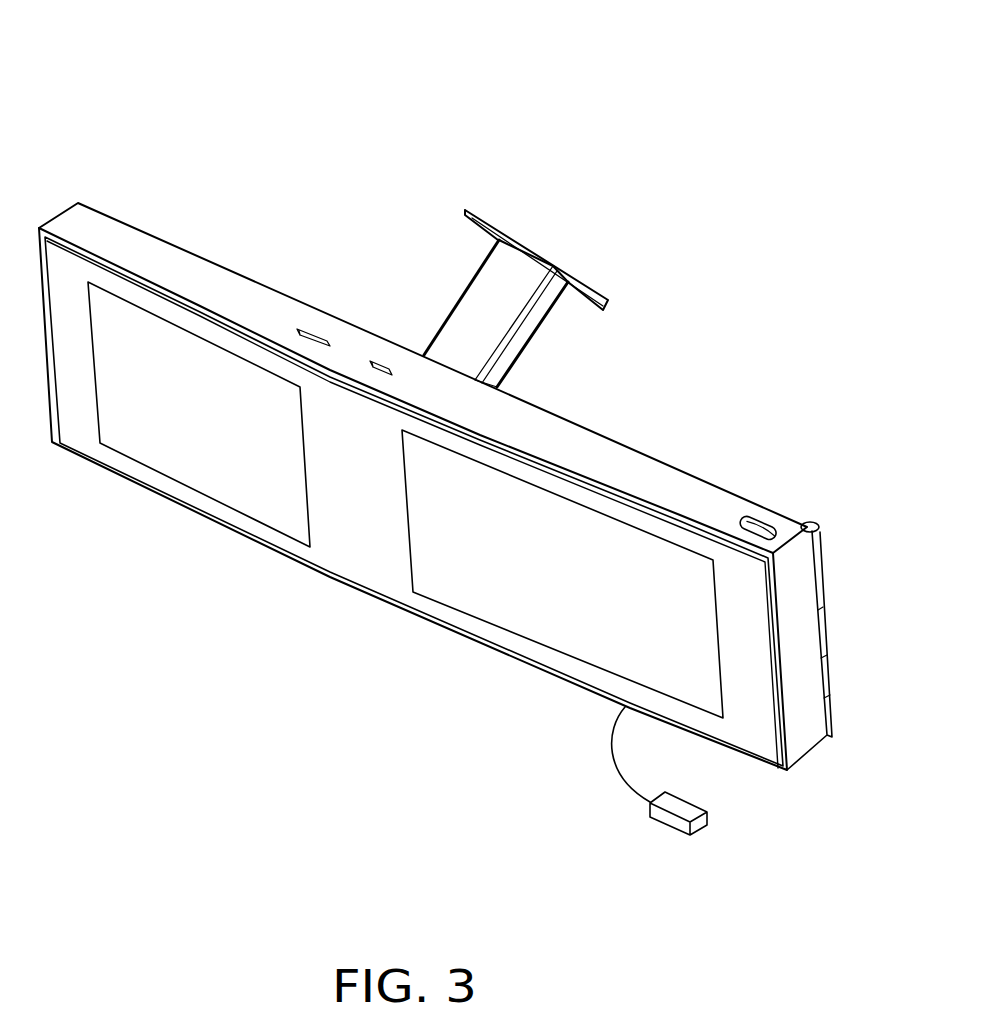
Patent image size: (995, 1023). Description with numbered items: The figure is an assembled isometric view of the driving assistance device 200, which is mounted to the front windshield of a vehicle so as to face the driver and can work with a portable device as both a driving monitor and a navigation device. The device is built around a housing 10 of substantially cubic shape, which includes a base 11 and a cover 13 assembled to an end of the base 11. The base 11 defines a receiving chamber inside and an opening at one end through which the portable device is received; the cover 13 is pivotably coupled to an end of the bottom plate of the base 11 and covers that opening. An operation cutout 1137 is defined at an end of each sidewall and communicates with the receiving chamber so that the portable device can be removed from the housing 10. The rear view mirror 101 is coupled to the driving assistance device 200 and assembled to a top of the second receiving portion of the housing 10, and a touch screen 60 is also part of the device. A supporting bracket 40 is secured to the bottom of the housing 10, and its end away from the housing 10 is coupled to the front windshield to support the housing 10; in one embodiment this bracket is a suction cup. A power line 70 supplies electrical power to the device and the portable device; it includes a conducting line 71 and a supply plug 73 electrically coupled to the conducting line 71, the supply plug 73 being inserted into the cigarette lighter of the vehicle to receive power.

The driving assistance device 200 is at (432, 118).
The housing 10 is at (840, 470).
The base 11 is at (725, 510).
The cover 13 is at (800, 550).
The operation cutout 1137 is at (763, 537).
The rear view mirror 101 is at (248, 478).
The touch screen 60 is at (522, 535).
The supporting bracket 40 is at (478, 305).
The power line 70 is at (582, 862).
The conducting line 71 is at (617, 778).
The supply plug 73 is at (668, 817).